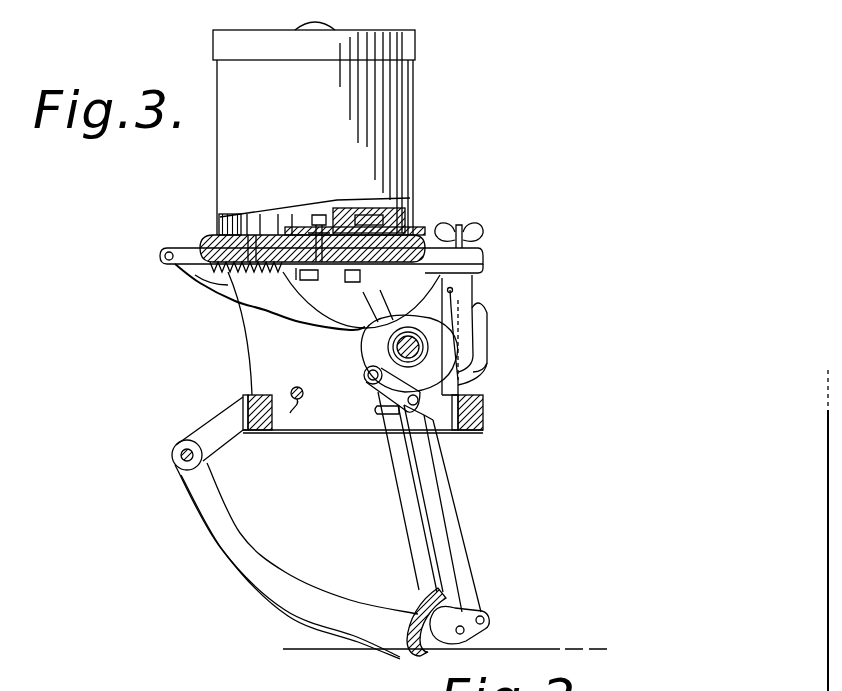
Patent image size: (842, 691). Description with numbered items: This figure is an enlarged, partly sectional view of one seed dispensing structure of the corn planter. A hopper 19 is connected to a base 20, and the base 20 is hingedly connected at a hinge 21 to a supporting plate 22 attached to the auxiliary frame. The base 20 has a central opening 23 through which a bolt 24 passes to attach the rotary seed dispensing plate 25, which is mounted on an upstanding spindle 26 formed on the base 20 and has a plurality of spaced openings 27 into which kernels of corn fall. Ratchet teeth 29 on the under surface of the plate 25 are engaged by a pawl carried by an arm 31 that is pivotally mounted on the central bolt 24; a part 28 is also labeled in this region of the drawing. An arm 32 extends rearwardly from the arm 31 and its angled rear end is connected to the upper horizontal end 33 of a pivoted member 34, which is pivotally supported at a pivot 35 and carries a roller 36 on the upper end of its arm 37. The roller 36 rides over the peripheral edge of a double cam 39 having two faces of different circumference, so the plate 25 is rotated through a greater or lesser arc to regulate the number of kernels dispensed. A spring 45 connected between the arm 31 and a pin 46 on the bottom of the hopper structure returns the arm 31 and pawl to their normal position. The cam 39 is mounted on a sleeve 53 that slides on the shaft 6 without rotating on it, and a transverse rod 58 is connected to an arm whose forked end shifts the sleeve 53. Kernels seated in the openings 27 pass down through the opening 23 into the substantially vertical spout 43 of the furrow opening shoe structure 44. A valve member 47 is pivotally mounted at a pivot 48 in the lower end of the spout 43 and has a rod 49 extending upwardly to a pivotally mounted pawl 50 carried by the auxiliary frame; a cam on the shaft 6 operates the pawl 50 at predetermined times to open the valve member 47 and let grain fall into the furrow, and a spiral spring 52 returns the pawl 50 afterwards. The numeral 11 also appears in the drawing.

The hopper 19 is at (410, 100).
The base 20 is at (207, 240).
The hinge connection 21 is at (207, 270).
The supporting plate 22 is at (253, 335).
The opening 23 is at (382, 305).
The bolt 24 is at (297, 217).
The rotary seed dispensing plate 25 is at (262, 235).
The spindle 26 is at (327, 217).
The openings 27 is at (410, 222).
The nut 28 is at (303, 267).
The ratchet teeth 29 is at (305, 272).
The arm 31 is at (300, 282).
The arm 32 is at (430, 270).
The upper horizontal end 33 is at (457, 298).
The pivoted member 34 is at (458, 320).
The pivotal support 35 is at (395, 432).
The roller 36 is at (362, 385).
The arm 37 is at (373, 388).
The double cam 39 is at (312, 396).
The spout 43 is at (418, 542).
The furrow opening shoe structure 44 is at (277, 598).
The spring 45 is at (223, 280).
The pin 46 is at (212, 272).
The valve member 47 is at (447, 625).
The pivotal mounting 48 is at (492, 633).
The rod 49 is at (462, 547).
The pawl 50 is at (492, 360).
The spiral spring 52 is at (440, 425).
The sleeve 53 is at (424, 343).
The rod 58 is at (290, 414).
The shaft 6 is at (483, 368).
The lever 11 is at (447, 420).